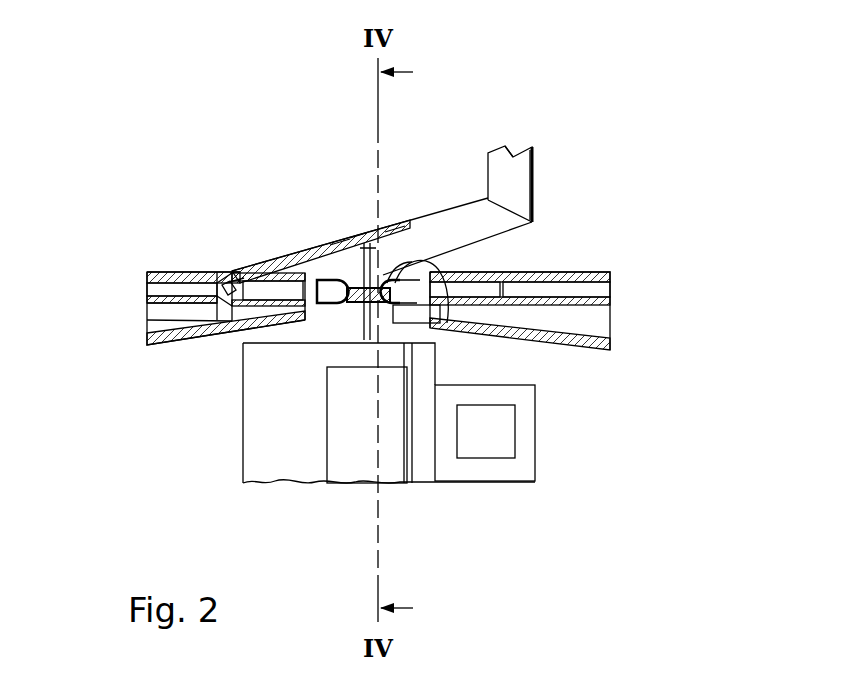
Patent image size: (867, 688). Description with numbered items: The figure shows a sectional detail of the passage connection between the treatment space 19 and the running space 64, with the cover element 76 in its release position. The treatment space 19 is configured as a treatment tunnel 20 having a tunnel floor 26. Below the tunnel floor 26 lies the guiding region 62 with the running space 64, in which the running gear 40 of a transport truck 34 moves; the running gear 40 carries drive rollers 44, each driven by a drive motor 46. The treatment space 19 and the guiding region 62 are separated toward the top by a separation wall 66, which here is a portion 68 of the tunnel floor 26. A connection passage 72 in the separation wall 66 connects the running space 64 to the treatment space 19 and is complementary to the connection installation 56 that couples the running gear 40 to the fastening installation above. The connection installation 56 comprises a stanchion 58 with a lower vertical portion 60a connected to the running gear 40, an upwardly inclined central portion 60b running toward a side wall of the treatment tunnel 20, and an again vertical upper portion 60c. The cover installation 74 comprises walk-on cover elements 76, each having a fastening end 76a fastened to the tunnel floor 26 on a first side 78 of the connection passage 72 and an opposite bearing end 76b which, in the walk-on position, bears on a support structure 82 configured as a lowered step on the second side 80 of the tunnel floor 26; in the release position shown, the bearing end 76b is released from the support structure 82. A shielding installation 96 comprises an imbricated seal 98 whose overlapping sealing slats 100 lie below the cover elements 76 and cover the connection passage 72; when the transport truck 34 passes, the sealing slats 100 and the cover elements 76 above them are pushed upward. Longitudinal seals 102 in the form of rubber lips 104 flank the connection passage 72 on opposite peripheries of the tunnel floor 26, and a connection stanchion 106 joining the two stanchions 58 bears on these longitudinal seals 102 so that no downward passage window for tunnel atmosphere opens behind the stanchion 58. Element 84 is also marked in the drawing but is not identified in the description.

The treatment space 19 is at (610, 187).
The treatment tunnel 20 is at (604, 153).
The tunnel floor 26 is at (147, 308).
The transport truck 34 is at (236, 432).
The running gear 40 is at (229, 463).
The drive roller 44 is at (347, 463).
The drive motor 46 is at (500, 447).
The connection installation 56 is at (576, 213).
The stanchion 58 is at (512, 163).
The lower vertical portion 60a is at (312, 345).
The central portion 60b is at (466, 223).
The upper portion 60c is at (528, 162).
The guiding region 62 is at (142, 378).
The running space 64 is at (570, 420).
The separation wall 66 is at (178, 262).
The portion of the tunnel floor 68 is at (152, 261).
The connection passage 72 is at (386, 283).
The cover installation 74 is at (356, 222).
The cover element 76 is at (318, 262).
The fastening end 76a is at (228, 270).
The bearing end 76b is at (395, 223).
The first side 78 is at (199, 298).
The second side 80 is at (459, 299).
The support structure 82 is at (411, 316).
The hinge joint 84 is at (231, 273).
The shielding installation 96 is at (295, 257).
The imbricated seal 98 is at (271, 261).
The sealing slat 100 is at (340, 243).
The longitudinal seal 102 is at (397, 287).
The rubber lip 104 is at (340, 300).
The connection stanchion 106 is at (370, 342).